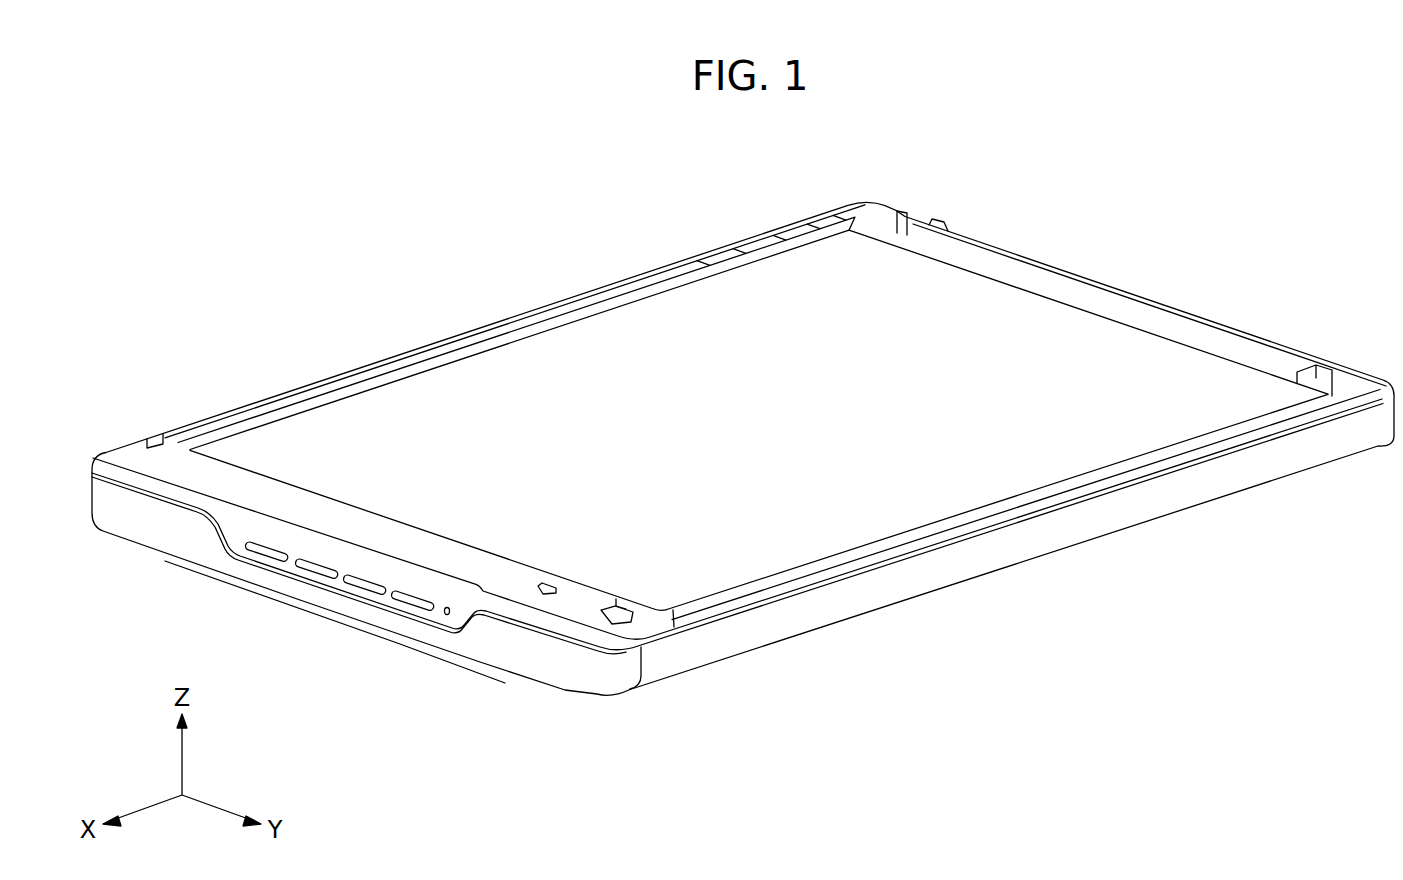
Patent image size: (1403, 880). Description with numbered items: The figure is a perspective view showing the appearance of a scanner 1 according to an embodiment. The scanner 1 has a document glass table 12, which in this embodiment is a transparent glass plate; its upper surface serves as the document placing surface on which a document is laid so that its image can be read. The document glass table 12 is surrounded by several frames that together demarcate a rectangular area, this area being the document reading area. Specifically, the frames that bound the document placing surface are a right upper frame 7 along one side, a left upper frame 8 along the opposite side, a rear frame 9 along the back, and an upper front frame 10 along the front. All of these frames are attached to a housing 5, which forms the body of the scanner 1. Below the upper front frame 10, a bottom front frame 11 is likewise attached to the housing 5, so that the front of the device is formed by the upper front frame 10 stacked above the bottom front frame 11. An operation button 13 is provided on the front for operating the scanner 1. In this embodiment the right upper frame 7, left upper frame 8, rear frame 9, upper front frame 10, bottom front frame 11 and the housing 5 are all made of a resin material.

The scanner 1 is at (340, 274).
The housing 5 is at (930, 582).
The right upper frame 7 is at (1118, 482).
The left upper frame 8 is at (470, 340).
The rear frame 9 is at (1090, 293).
The upper front frame 10 is at (232, 485).
The bottom front frame 11 is at (150, 530).
The document glass table 12 is at (705, 305).
The operation button 13 is at (315, 567).